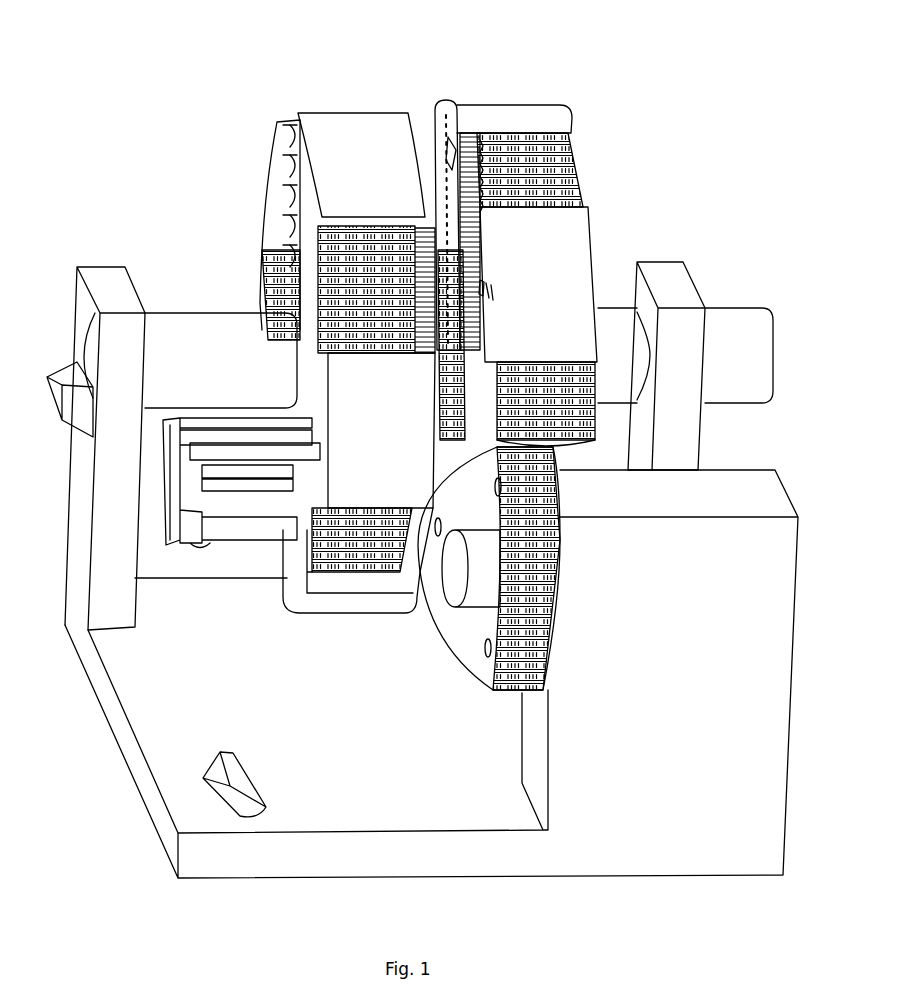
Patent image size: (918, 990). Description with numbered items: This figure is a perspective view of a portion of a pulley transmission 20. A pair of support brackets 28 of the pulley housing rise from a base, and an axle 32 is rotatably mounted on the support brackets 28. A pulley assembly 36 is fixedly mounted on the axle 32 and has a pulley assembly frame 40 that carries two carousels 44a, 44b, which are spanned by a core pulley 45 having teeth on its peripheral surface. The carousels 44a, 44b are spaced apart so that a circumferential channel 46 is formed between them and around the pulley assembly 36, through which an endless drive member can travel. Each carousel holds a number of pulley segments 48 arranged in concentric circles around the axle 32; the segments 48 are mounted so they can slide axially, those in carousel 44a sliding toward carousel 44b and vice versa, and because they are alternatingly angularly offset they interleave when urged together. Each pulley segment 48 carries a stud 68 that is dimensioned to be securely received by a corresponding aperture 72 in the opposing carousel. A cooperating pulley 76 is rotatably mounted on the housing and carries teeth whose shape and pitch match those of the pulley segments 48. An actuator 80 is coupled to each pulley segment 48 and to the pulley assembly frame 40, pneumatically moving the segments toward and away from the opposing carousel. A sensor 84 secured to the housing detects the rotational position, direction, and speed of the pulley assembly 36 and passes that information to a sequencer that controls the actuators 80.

The pulley transmission 20 is at (717, 86).
The support brackets 28 is at (103, 278).
The axle 32 is at (740, 318).
The pulley assembly 36 is at (584, 100).
The pulley assembly frame 40 is at (259, 151).
The carousel 44a is at (352, 130).
The carousel 44b is at (568, 250).
The core pulley 45 is at (460, 323).
The circumferential channel 46 is at (432, 104).
The pulley segments 48 is at (280, 120).
The stud 68 is at (492, 135).
The aperture 72 is at (457, 128).
The cooperating pulley 76 is at (545, 590).
The actuator 80 is at (238, 530).
The sensor 84 is at (75, 410).